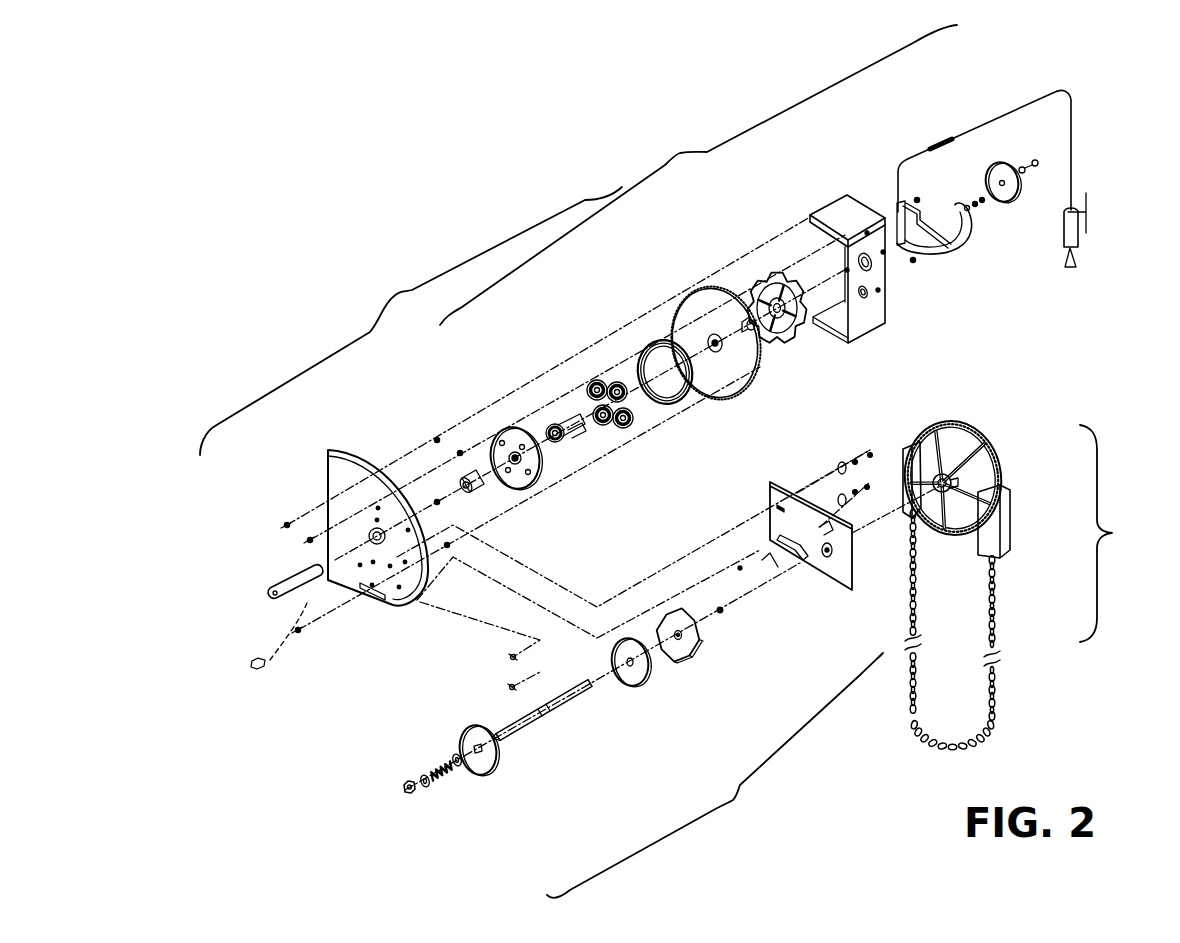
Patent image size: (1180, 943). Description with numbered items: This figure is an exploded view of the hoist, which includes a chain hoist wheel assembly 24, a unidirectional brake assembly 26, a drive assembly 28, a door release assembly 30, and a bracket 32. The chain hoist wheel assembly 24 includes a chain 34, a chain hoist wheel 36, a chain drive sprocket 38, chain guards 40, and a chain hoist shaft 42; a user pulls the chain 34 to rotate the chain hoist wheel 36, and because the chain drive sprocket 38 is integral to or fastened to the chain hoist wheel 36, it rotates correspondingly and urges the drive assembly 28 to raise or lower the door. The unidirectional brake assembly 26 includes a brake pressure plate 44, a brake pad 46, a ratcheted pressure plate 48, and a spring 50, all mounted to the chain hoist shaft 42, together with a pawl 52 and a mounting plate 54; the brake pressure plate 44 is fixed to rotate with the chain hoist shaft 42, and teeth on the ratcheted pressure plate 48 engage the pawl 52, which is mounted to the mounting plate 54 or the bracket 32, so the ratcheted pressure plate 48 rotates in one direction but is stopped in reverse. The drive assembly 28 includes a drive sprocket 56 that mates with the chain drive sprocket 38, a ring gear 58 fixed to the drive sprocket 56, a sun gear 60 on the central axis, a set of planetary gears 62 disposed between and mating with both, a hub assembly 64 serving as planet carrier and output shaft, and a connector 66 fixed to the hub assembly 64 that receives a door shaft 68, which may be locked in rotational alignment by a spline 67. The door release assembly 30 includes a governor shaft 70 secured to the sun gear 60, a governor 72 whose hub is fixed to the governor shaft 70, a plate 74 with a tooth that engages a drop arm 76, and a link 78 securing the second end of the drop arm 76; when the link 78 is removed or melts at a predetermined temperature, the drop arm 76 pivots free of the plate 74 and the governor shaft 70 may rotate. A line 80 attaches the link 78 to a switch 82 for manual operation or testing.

The chain hoist wheel assembly 24 is at (1114, 533).
The unidirectional brake assembly 26 is at (715, 775).
The drive assembly 28 is at (411, 321).
The door release assembly 30 is at (698, 175).
The bracket 32 is at (868, 337).
The chain 34 is at (1000, 600).
The chain hoist wheel 36 is at (1000, 447).
The chain drive sprocket 38 is at (940, 520).
The chain guards 40 is at (1013, 518).
The chain hoist shaft 42 is at (575, 702).
The brake pressure plate 44 is at (475, 722).
The brake pad 46 is at (648, 685).
The ratcheted pressure plate 48 is at (700, 657).
The spring 50 is at (437, 763).
The pawl 52 is at (810, 558).
The mounting plate 54 is at (855, 567).
The drive sprocket 56 is at (683, 293).
The ring gear 58 is at (653, 338).
The sun gear 60 is at (563, 420).
The set of planetary gears 62 is at (613, 385).
The hub assembly 64 is at (490, 435).
The connector 66 is at (483, 490).
The spline 67 is at (262, 674).
The door shaft 68 is at (302, 568).
The governor shaft 70 is at (580, 427).
The governor 72 is at (802, 342).
The plate 74 is at (997, 200).
The drop arm 76 is at (953, 253).
The link 78 is at (941, 139).
The line 80 is at (1070, 95).
The switch 82 is at (1080, 242).